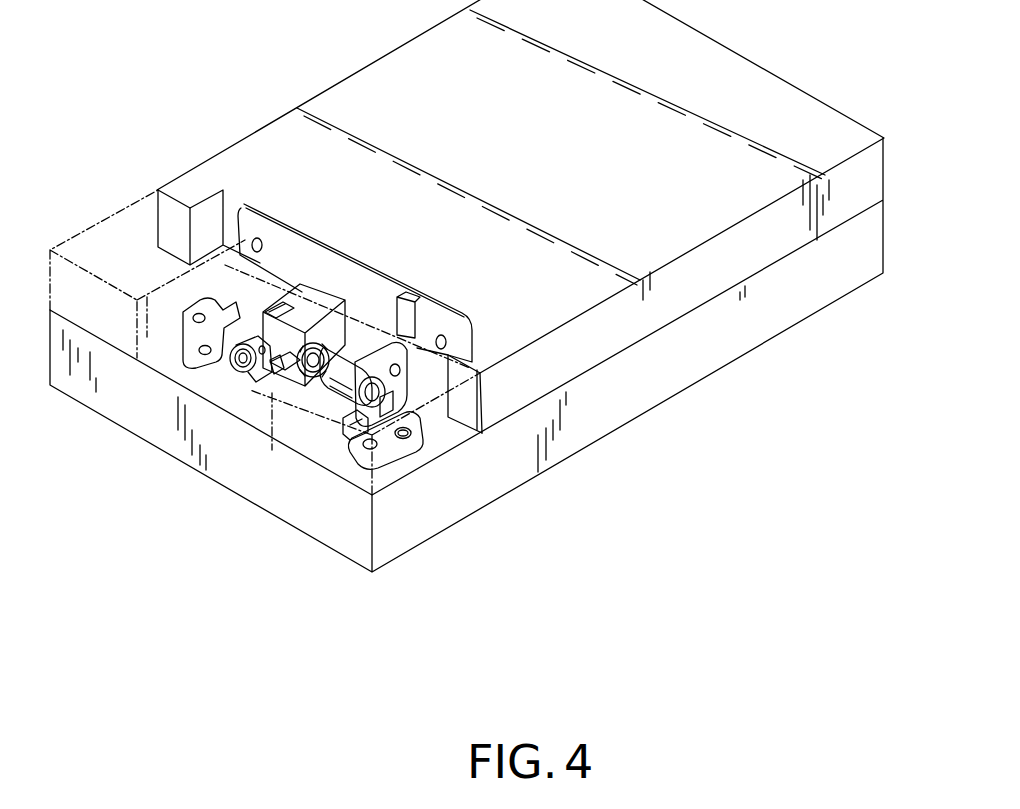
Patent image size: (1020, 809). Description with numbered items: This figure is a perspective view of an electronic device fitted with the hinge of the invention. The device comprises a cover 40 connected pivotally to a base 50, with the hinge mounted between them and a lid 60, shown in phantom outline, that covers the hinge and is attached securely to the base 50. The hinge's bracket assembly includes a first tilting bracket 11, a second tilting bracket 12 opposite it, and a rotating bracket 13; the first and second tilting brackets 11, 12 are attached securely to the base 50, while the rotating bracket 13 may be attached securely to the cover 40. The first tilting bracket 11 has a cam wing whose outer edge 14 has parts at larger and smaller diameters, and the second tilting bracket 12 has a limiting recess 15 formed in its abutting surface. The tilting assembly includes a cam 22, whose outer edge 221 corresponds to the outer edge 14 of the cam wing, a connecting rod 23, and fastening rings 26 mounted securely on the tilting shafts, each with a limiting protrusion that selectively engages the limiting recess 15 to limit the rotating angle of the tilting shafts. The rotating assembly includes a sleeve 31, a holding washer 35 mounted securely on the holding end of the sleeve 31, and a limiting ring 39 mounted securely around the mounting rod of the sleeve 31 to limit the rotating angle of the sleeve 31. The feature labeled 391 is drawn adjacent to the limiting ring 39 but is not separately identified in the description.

The first tilting bracket 11 is at (190, 333).
The second tilting bracket 12 is at (388, 442).
The rotating bracket 13 is at (252, 207).
The outer edge 14 is at (270, 287).
The limiting recess 15 is at (368, 428).
The cam 22 is at (298, 377).
The outer edge 221 is at (330, 317).
The connecting rod 23 is at (420, 317).
The fastening ring 26 is at (397, 400).
The sleeve 31 is at (317, 287).
The holding washer 35 is at (360, 300).
The limiting ring 39 is at (247, 370).
The cam protrusion 391 is at (275, 367).
The cover 40 is at (367, 88).
The base 50 is at (668, 380).
The lid 60 is at (112, 218).